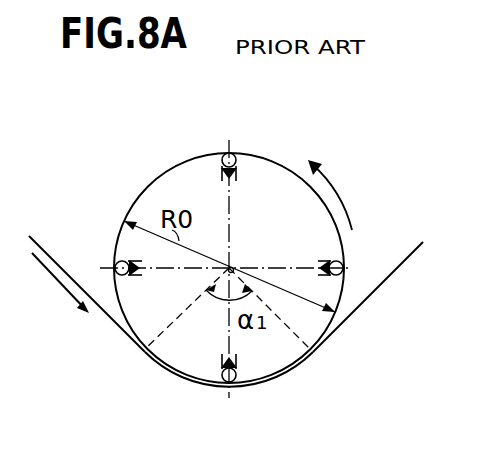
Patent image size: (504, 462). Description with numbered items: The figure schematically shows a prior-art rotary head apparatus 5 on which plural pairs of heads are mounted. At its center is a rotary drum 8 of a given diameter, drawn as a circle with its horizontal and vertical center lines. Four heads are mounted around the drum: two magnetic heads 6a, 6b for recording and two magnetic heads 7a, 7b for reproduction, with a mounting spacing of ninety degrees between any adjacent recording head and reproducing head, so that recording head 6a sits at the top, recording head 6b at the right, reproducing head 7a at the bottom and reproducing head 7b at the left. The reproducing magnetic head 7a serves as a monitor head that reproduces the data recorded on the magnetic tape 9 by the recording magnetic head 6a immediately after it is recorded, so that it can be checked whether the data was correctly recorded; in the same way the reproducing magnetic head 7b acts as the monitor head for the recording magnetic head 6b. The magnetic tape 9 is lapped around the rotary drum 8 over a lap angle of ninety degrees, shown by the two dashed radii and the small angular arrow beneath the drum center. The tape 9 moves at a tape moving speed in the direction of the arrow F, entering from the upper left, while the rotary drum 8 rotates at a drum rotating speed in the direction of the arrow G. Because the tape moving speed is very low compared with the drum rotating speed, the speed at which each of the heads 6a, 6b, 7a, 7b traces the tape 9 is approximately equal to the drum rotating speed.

The rotary head apparatus 5 is at (284, 251).
The rotary drum 8 is at (195, 182).
The magnetic tape 9 is at (367, 298).
The recording magnetic head 6a is at (233, 153).
The recording magnetic head 6b is at (343, 263).
The reproducing magnetic head 7a is at (240, 387).
The reproducing magnetic head 7b is at (117, 256).
The arrow F is at (65, 288).
The arrow G is at (350, 207).